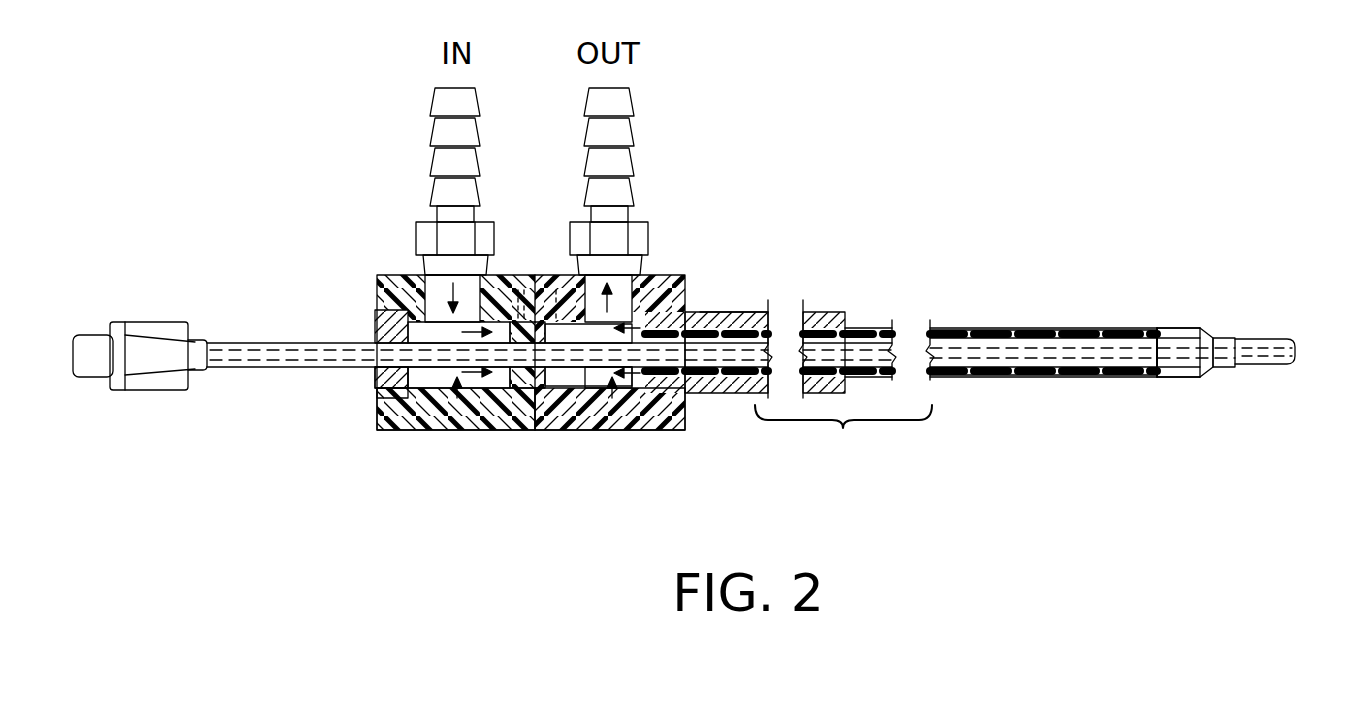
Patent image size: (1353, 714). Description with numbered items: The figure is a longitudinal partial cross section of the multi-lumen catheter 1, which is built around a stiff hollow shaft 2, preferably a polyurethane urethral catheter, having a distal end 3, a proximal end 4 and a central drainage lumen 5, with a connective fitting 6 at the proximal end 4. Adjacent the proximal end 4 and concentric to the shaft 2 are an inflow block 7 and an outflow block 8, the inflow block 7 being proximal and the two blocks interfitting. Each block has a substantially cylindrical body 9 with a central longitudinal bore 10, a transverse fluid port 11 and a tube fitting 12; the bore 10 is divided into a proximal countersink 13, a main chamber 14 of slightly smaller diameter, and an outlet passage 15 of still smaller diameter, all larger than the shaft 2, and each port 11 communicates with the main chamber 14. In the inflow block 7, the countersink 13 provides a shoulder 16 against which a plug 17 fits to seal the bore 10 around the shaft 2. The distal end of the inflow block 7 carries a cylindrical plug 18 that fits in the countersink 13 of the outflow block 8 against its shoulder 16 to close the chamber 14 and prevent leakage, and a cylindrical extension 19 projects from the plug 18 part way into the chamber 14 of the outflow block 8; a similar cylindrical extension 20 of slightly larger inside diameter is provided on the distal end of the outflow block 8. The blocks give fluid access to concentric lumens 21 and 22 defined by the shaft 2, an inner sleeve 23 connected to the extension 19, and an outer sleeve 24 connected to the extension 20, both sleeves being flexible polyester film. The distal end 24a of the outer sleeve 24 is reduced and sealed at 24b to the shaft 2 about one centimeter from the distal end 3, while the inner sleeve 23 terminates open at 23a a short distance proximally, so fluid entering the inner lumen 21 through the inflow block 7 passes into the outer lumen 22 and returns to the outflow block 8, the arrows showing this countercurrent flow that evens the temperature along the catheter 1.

The multi-lumen catheter 1 is at (882, 143).
The stiff hollow shaft 2 is at (262, 343).
The distal end 3 is at (1288, 338).
The proximal end 4 is at (221, 384).
The central drainage lumen 5 is at (307, 355).
The connective fitting 6 is at (141, 322).
The inflow block 7 is at (408, 440).
The outflow block 8 is at (665, 437).
The cylindrical body 9 is at (437, 425).
The central longitudinal bore 10 is at (478, 427).
The transverse fluid port 11 is at (443, 287).
The tube fitting 12 is at (435, 107).
The proximal countersink 13 is at (377, 312).
The main chamber 14 is at (437, 287).
The outlet passage 15 is at (520, 287).
The shoulder 16 is at (560, 287).
The plug 17 is at (377, 385).
The cylindrical plug 18 is at (553, 382).
The cylindrical extension 19 is at (612, 402).
The cylindrical extension 20 is at (757, 312).
The inner lumen 21 is at (980, 374).
The outer lumen 22 is at (1030, 378).
The inner sleeve 23 is at (1125, 330).
The inner sleeve termination 23a is at (1162, 372).
The outer sleeve 24 is at (958, 330).
The distal end of outer sleeve 24a is at (1210, 372).
The seal 24b is at (1228, 330).